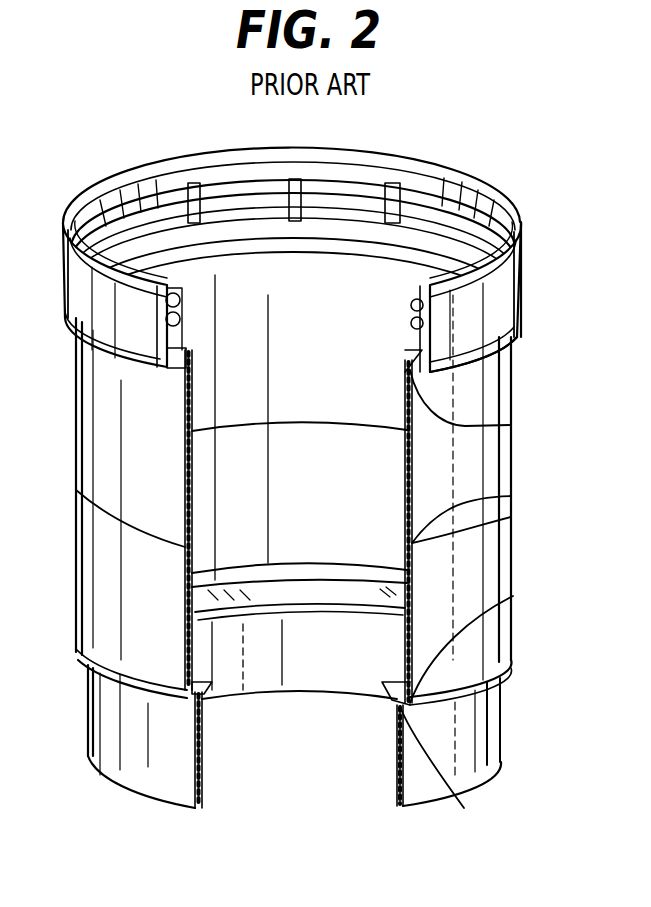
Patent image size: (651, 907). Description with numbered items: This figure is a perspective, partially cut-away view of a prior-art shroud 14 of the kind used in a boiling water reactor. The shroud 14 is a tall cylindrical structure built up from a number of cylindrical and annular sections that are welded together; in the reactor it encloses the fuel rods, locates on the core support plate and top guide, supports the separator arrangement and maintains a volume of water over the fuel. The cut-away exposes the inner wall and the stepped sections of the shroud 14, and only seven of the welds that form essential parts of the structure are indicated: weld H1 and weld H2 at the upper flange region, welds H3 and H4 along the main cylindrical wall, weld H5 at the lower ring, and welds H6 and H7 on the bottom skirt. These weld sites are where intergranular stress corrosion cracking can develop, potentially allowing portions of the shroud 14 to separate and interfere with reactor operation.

The shroud 14 is at (100, 586).
The weld H1 is at (521, 283).
The weld H2 is at (516, 360).
The weld H3 is at (512, 418).
The weld H4 is at (512, 497).
The weld H5 is at (513, 596).
The weld H6 is at (464, 808).
The weld H7 is at (398, 808).